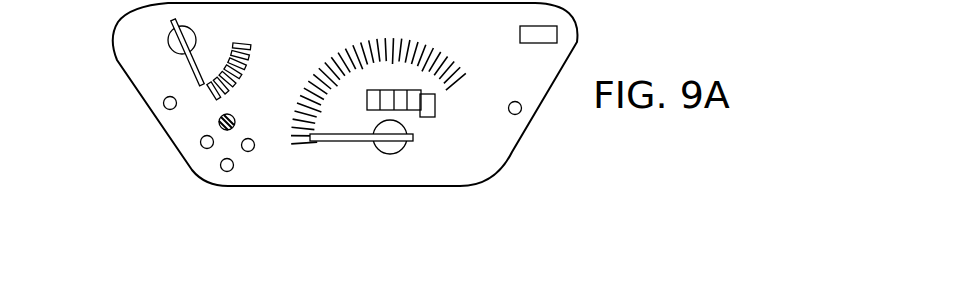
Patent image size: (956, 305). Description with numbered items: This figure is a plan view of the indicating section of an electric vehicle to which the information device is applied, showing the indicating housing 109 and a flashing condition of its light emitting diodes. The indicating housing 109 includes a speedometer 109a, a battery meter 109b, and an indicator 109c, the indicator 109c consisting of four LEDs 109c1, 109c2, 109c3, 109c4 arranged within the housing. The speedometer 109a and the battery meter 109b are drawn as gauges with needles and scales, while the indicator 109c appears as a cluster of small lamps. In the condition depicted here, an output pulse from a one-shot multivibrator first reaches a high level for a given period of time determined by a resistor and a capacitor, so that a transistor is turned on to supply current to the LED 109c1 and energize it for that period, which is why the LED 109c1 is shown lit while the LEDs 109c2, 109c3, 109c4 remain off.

The indicating housing 109 is at (571, 19).
The speedometer 109a is at (444, 135).
The battery meter 109b is at (160, 65).
The indicator 109c is at (206, 186).
The LED 109c1 is at (219, 127).
The LED 109c2 is at (252, 151).
The LED 109c3 is at (229, 172).
The LED 109c4 is at (207, 149).